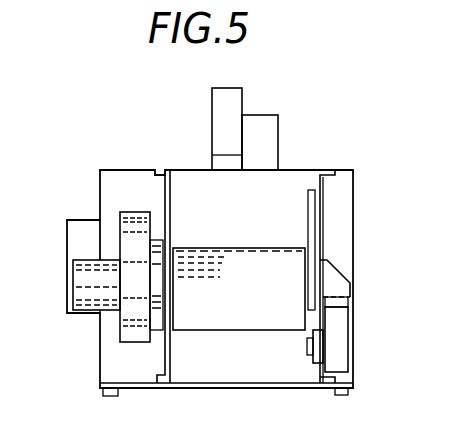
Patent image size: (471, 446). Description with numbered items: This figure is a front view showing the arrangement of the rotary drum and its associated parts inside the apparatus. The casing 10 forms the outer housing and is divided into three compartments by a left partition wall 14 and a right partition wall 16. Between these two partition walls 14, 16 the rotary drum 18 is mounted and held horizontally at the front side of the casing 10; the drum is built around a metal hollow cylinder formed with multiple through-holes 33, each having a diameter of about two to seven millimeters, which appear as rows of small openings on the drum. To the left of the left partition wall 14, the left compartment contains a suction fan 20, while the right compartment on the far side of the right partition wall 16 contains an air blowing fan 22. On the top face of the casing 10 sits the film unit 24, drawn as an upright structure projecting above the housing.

The casing 10 is at (356, 191).
The left partition wall 14 is at (163, 365).
The right partition wall 16 is at (320, 370).
The rotary drum 18 is at (240, 332).
The suction fan 20 is at (119, 242).
The air blowing fan 22 is at (340, 342).
The film unit 24 is at (242, 86).
The through-holes 33 is at (180, 250).